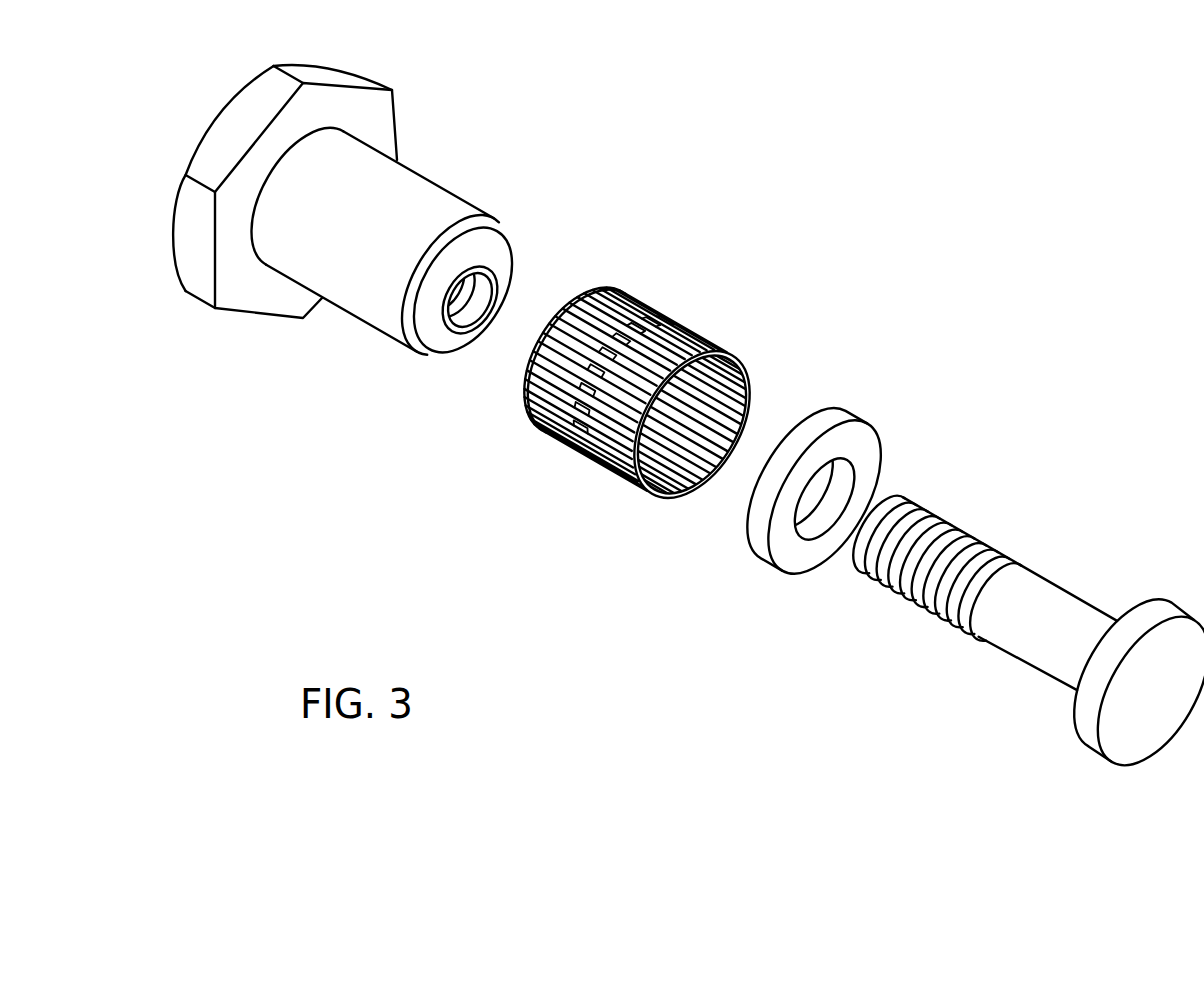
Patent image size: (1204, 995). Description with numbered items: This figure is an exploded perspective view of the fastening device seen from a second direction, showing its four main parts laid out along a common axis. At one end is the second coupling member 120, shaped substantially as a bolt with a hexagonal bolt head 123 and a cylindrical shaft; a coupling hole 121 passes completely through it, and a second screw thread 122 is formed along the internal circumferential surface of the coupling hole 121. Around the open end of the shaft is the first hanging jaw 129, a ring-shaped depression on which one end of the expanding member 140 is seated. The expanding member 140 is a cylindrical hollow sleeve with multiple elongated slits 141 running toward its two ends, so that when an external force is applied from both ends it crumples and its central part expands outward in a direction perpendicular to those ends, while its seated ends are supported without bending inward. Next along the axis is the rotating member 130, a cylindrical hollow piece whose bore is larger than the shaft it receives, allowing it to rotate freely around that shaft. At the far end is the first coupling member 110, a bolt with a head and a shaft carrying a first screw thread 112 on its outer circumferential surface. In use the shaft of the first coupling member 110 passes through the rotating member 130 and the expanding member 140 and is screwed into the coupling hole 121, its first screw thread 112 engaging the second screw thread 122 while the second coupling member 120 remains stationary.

The first coupling member 110 is at (1028, 622).
The first screw thread 112 is at (933, 517).
The second coupling member 120 is at (434, 200).
The coupling hole 121 is at (483, 282).
The second screw thread 122 is at (468, 312).
The bolt head 123 is at (223, 133).
The first hanging jaw 129 is at (413, 330).
The rotating member 130 is at (830, 422).
The expanding member 140 is at (647, 390).
The slits 141 is at (583, 345).